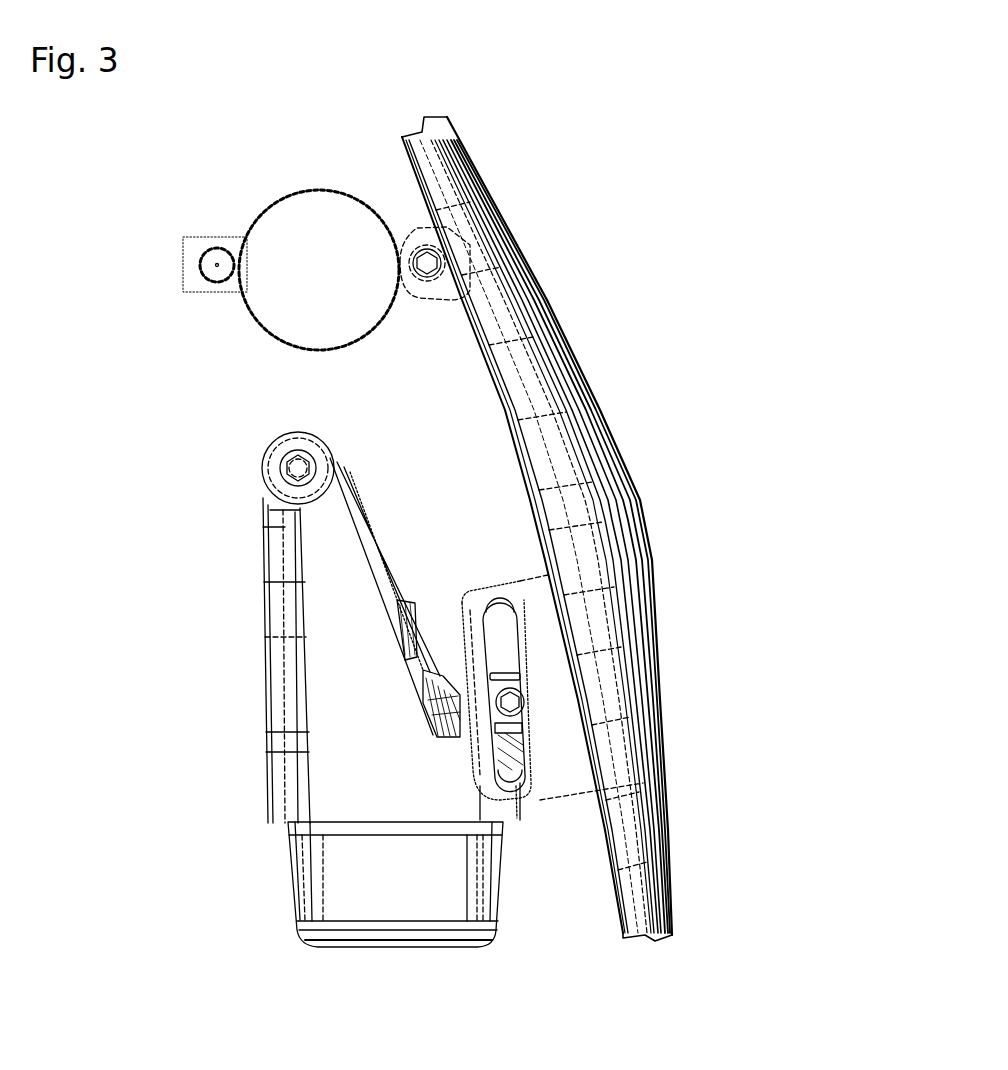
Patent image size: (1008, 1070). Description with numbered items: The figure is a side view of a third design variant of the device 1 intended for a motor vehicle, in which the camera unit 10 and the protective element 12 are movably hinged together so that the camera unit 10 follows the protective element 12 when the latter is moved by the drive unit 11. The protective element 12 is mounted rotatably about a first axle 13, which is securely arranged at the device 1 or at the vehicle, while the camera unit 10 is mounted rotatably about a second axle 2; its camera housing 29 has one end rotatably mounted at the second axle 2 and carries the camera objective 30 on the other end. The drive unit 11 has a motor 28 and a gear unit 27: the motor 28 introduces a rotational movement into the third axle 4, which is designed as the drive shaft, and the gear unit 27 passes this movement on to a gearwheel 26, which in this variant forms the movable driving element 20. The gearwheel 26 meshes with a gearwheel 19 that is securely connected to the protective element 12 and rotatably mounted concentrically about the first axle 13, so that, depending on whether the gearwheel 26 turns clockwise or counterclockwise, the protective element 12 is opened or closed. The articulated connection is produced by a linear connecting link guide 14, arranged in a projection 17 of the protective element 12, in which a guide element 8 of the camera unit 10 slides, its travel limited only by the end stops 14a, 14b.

The device 1 is at (528, 124).
The second axle 2 is at (303, 470).
The third axle 4 is at (223, 262).
The guide element 8 is at (515, 700).
The camera unit 10 is at (372, 905).
The drive unit 11 is at (118, 313).
The protective element 12 is at (605, 400).
The first axle 13 is at (425, 268).
The connecting link guide 14 is at (510, 728).
The end stop 14a is at (518, 780).
The end stop 14b is at (495, 600).
The projection 17 is at (560, 775).
The gearwheel 19 is at (410, 252).
The movable driving element 20 is at (268, 330).
The gearwheel 26 is at (330, 192).
The gear unit 27 is at (213, 283).
The motor 28 is at (190, 278).
The camera housing 29 is at (320, 690).
The camera objective 30 is at (407, 940).